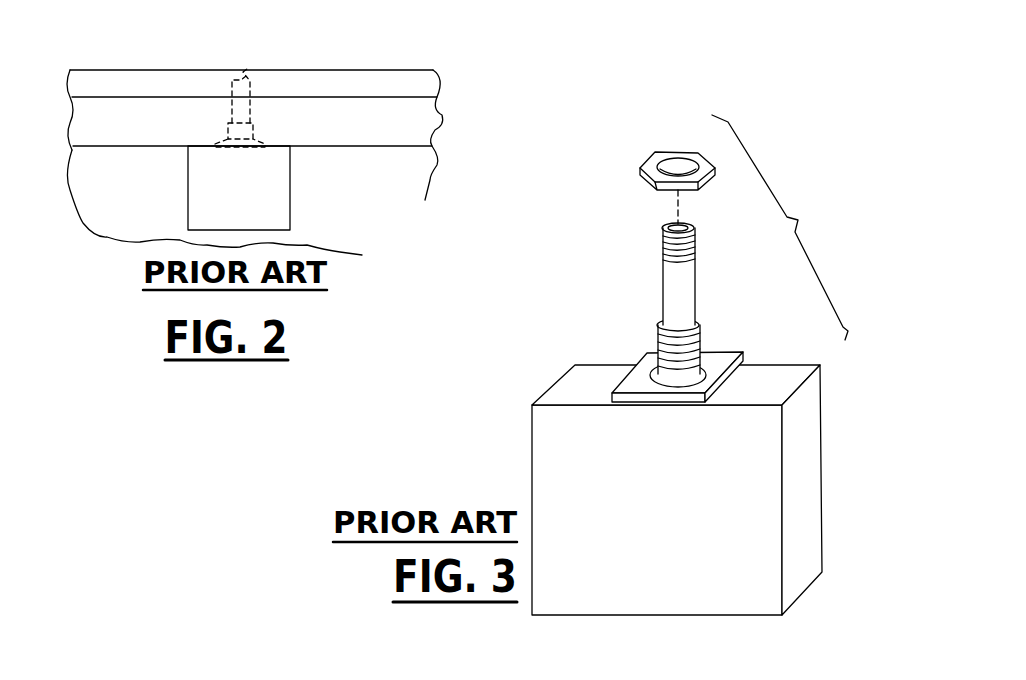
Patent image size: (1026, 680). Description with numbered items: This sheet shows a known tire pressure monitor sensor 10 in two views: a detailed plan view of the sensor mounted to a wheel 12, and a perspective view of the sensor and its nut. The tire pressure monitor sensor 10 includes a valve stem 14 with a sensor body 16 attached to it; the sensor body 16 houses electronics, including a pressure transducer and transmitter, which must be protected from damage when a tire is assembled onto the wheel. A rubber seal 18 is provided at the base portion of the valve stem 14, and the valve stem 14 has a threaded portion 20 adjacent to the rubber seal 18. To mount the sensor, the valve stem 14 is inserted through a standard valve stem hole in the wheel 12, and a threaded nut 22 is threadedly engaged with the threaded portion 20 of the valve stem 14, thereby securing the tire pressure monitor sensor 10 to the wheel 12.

In FIG. 2, the tire pressure monitor sensor 10 is at (277, 131).
In FIG. 2, the wheel 12 is at (108, 72).
In FIG. 2, the valve stem 14 is at (246, 70).
In FIG. 3, the valve stem 14 is at (658, 283).
In FIG. 2, the sensor body 16 is at (198, 212).
In FIG. 3, the sensor body 16 is at (755, 566).
In FIG. 3, the rubber seal 18 is at (655, 377).
In FIG. 3, the threaded portion 20 is at (665, 347).
In FIG. 2, the threaded nut 22 is at (227, 128).
In FIG. 3, the threaded nut 22 is at (648, 156).